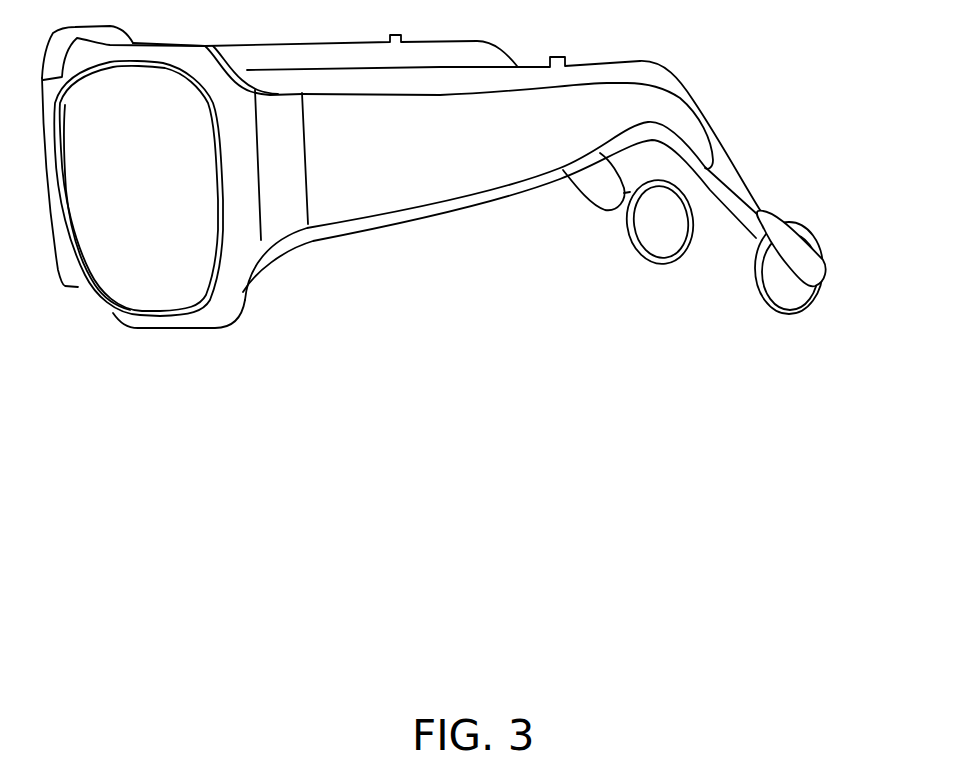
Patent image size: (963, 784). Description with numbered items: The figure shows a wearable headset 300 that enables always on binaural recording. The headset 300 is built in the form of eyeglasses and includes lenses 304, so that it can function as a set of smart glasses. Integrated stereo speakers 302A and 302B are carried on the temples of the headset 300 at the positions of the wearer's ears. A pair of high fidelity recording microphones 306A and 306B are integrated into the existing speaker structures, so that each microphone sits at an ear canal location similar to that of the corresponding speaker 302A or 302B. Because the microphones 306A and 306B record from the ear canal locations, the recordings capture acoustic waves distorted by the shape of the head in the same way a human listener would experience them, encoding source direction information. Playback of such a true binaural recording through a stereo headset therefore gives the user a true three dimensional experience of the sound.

The wearable headset 300 is at (471, 367).
The integrated stereo speaker 302A is at (774, 313).
The integrated stereo speaker 302B is at (657, 268).
The lenses 304 is at (121, 288).
The high fidelity recording microphone 306A is at (810, 250).
The high fidelity recording microphone 306B is at (623, 211).